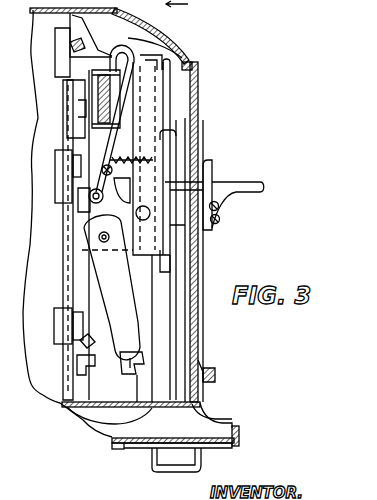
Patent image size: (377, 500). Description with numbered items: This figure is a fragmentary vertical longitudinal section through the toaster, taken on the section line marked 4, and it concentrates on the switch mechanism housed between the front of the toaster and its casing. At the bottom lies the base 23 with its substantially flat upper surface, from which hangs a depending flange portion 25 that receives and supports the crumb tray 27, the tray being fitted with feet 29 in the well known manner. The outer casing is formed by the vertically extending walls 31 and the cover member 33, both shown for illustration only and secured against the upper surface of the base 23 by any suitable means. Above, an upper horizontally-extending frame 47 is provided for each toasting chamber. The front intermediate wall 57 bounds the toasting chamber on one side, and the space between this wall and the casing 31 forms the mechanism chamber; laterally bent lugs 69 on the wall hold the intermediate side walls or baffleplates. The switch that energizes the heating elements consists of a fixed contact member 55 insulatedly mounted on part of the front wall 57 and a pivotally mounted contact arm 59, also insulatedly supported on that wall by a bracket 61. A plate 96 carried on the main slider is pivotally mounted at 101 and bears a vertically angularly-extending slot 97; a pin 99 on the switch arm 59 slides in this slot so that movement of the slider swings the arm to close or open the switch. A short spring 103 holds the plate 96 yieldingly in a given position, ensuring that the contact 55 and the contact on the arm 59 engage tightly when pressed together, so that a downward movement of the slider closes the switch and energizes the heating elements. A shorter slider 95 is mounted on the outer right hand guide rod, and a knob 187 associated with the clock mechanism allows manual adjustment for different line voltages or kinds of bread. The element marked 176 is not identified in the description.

The section line 4 is at (178, 11).
The cover 176 is at (203, 3).
The cover member 33 is at (150, 30).
The vertically angularly-extending slot 97 is at (160, 40).
The slider 95 is at (195, 62).
The vertically extending walls 31 is at (198, 98).
The upper horizontally-extending frame 47 is at (100, 46).
The front intermediate wall 57 is at (70, 76).
The short spring 103 is at (172, 146).
The laterally bent lugs 69 is at (62, 172).
The plate 96 is at (122, 124).
The pin 99 is at (92, 198).
The pivot 101 is at (186, 230).
The bracket 61 is at (80, 230).
The contact arm 59 is at (114, 328).
The fixed contact member 55 is at (60, 402).
The knob 187 is at (205, 372).
The base 23 is at (205, 414).
The depending flange portion 25 is at (240, 434).
The crumb tray 27 is at (124, 450).
The feet 29 is at (155, 465).